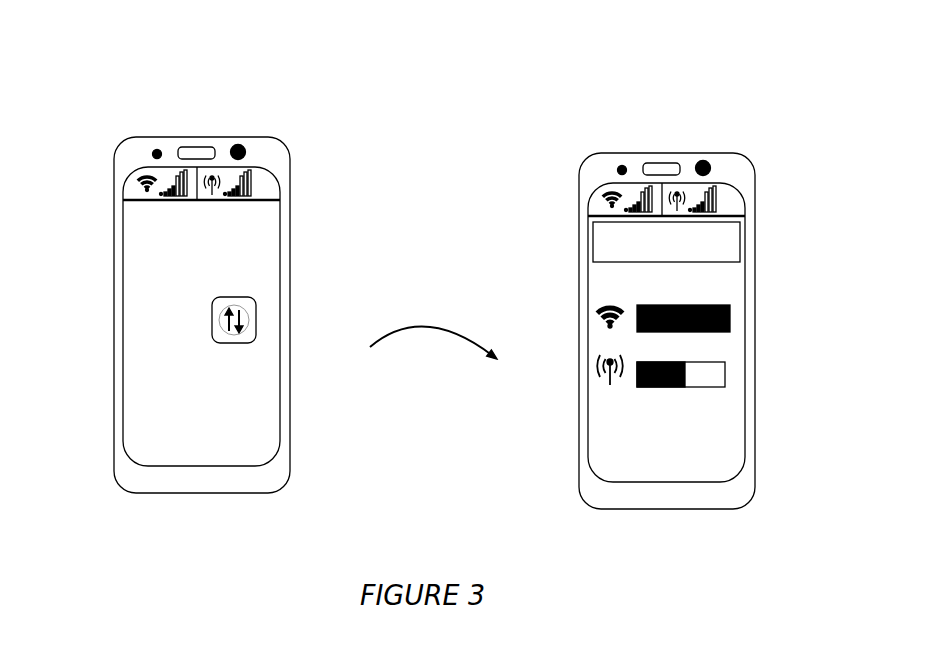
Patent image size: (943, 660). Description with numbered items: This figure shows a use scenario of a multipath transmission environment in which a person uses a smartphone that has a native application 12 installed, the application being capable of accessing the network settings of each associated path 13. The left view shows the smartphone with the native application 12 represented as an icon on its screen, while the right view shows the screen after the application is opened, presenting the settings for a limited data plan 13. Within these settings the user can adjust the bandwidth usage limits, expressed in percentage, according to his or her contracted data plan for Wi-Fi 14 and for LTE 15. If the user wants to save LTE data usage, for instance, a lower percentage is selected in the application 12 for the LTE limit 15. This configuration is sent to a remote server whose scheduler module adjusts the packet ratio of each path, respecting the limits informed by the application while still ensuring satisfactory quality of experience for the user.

The native application 12 is at (267, 315).
The network settings of each associated path 13 is at (590, 238).
The Wi-Fi data plan bandwidth usage limit 14 is at (732, 322).
The LTE data plan bandwidth usage limit 15 is at (727, 377).